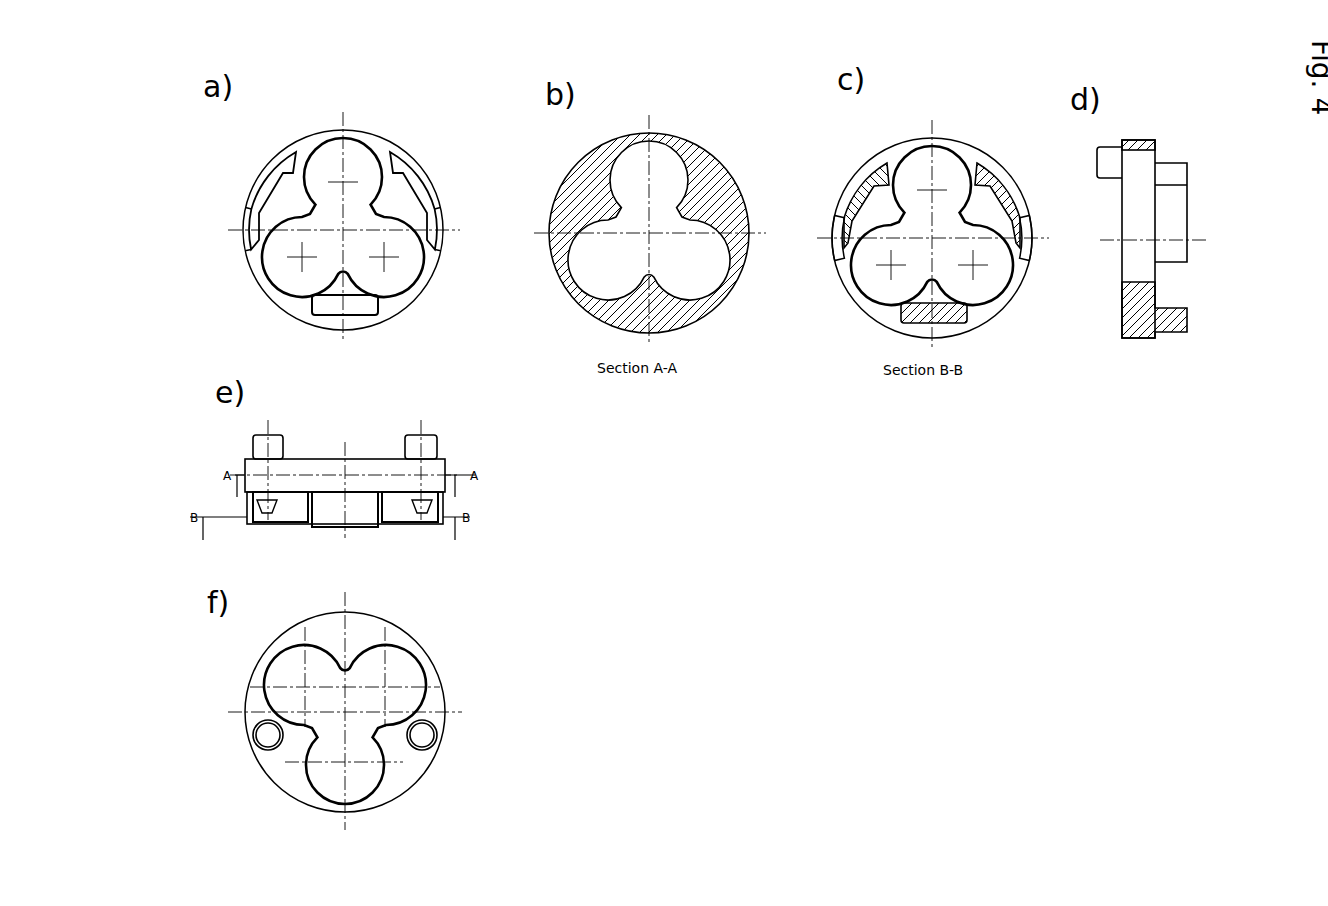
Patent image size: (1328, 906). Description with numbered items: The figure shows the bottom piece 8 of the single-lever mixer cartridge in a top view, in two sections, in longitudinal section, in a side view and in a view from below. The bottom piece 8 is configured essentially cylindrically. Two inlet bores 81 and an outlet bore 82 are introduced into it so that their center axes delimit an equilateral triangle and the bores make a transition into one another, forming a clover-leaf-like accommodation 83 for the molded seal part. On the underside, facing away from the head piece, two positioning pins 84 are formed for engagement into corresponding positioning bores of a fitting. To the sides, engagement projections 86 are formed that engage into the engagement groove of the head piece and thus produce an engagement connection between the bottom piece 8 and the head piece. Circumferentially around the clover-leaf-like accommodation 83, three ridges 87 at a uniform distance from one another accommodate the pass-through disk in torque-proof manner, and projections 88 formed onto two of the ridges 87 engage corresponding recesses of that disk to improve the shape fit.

The bottom piece 8 is at (397, 87).
The inlet bores 81 is at (283, 273).
The outlet bore 82 is at (372, 154).
The clover-leaf-like accommodation 83 is at (662, 193).
The positioning pins 84 is at (430, 446).
The engagement projections 86 is at (428, 517).
The ridges 87 is at (427, 205).
The projections 88 is at (402, 168).